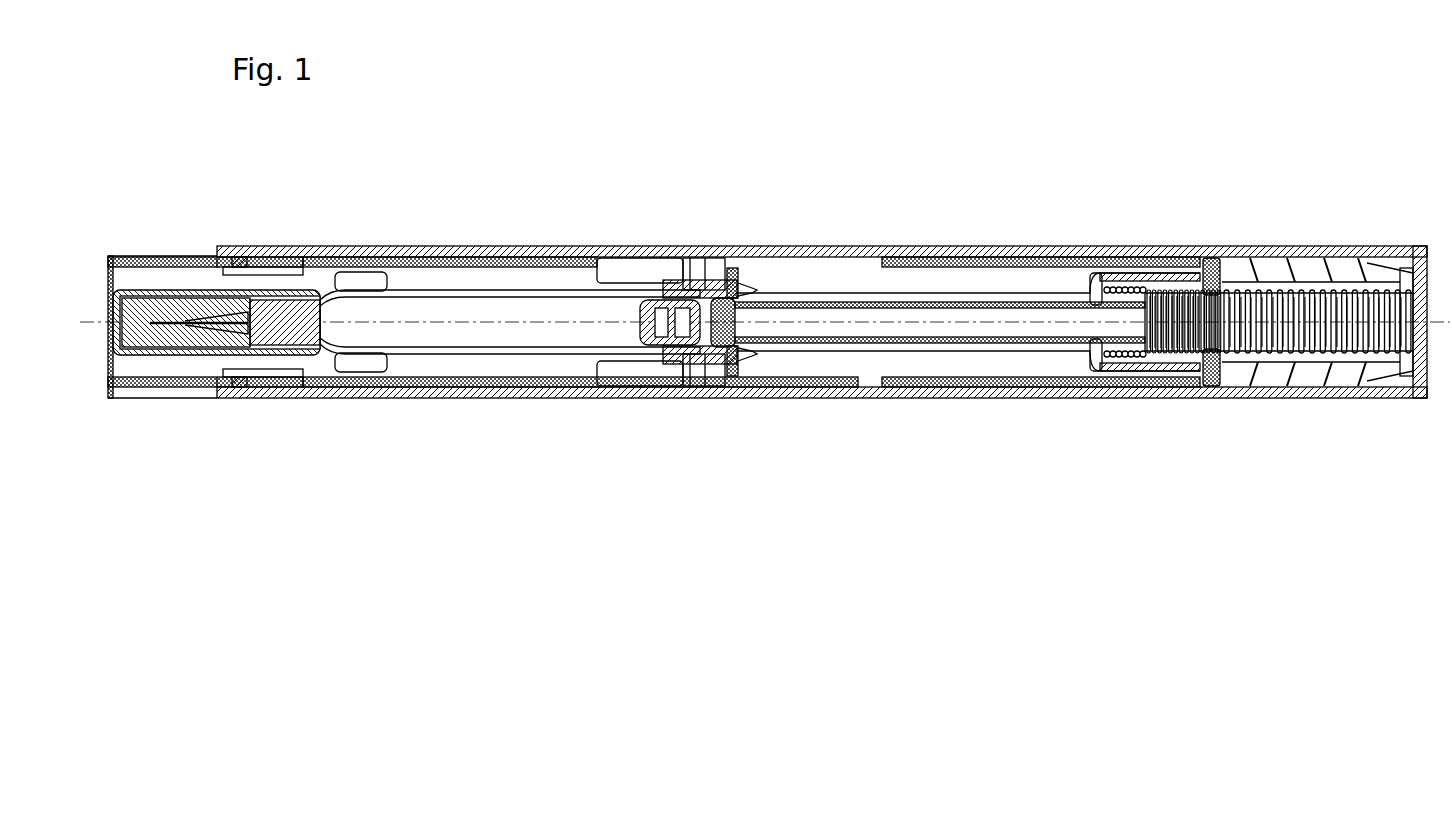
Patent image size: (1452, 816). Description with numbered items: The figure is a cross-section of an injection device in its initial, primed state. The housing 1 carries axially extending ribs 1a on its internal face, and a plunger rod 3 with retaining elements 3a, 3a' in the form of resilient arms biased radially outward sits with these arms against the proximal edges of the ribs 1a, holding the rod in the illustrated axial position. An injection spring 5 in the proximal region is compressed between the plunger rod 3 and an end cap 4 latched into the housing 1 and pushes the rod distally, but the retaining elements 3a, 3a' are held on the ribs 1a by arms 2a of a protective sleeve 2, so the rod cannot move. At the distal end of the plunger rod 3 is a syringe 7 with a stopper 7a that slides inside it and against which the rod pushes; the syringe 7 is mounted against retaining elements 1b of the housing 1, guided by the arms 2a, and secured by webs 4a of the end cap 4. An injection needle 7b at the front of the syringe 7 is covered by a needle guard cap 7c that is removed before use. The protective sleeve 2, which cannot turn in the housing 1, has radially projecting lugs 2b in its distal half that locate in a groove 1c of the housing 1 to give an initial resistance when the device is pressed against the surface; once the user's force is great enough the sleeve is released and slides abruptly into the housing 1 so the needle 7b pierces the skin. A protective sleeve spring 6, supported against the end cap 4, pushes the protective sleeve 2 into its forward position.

The housing 1 is at (898, 257).
The rib 1a is at (961, 265).
The retaining element 1b is at (683, 265).
The groove 1c is at (227, 262).
The protective sleeve 2 is at (152, 256).
The arm 2a is at (1145, 267).
The lug 2b is at (245, 262).
The plunger rod 3 is at (1006, 300).
The retaining element 3a is at (1203, 240).
The retaining element 3a' is at (1205, 409).
The end cap 4 is at (1418, 268).
The web 4a is at (828, 350).
The injection spring 5 is at (1283, 347).
The protective sleeve spring 6 is at (1345, 385).
The syringe 7 is at (480, 350).
The stopper 7a is at (650, 340).
The injection needle 7b is at (185, 340).
The needle guard cap 7c is at (118, 356).